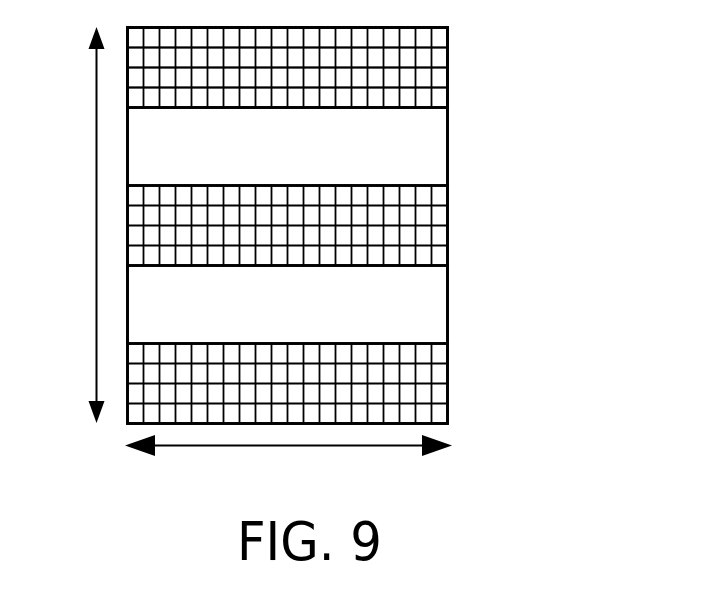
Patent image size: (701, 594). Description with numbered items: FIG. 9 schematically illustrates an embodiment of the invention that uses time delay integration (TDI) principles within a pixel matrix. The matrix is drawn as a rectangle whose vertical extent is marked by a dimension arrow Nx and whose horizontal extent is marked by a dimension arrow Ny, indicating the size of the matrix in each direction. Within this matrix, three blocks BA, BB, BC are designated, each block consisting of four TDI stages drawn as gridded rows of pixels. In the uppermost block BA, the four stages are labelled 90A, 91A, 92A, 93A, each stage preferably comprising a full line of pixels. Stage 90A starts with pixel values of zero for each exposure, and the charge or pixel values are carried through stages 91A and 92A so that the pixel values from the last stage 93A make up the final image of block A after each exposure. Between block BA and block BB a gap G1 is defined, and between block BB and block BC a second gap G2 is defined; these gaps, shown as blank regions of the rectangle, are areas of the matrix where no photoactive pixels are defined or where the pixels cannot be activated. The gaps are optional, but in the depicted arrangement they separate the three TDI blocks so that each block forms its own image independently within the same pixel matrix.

The TDI stage 90A is at (430, 100).
The TDI stage 91A is at (430, 78).
The TDI stage 92A is at (430, 58).
The TDI stage 93A is at (430, 37).
The block A BA is at (517, 12).
The block B BB is at (517, 187).
The block C BC is at (517, 343).
The gap G1 is at (517, 122).
The gap G2 is at (517, 273).
The number of pixels in x direction Nx is at (77, 225).
The number of pixels in y direction Ny is at (288, 461).